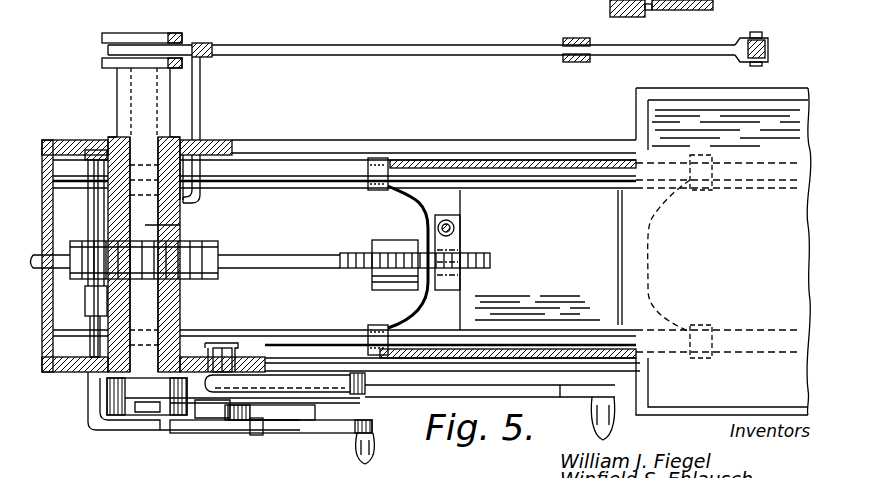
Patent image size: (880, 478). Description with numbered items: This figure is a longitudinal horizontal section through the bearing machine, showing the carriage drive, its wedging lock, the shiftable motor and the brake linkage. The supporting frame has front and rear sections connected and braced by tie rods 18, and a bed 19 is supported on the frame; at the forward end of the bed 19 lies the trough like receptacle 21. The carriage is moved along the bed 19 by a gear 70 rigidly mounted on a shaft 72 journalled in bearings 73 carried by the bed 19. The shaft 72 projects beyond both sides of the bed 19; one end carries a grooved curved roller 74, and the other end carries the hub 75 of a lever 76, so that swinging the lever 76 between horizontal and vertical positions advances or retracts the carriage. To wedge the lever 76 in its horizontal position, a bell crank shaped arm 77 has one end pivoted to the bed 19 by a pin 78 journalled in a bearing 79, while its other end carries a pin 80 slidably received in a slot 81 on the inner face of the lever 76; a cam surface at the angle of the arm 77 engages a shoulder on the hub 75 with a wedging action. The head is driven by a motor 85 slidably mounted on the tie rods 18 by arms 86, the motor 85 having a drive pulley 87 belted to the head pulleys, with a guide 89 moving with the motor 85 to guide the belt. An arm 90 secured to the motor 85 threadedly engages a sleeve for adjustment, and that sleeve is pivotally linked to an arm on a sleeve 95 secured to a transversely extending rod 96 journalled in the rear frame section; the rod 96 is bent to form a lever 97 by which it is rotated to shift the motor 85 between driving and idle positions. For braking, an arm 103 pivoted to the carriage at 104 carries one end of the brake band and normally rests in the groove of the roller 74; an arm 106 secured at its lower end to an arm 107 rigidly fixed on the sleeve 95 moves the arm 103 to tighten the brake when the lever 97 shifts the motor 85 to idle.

The tie rods 18 is at (558, 160).
The bed 19 is at (322, 140).
The trough like receptacle 21 is at (778, 118).
The gear 70 is at (218, 246).
The shaft 72 is at (182, 229).
The bearings 73 is at (183, 212).
The curved roller 74 is at (185, 36).
The hub 75 is at (133, 386).
The lever 76 is at (408, 390).
The bell crank shaped arm 77 is at (300, 378).
The pin 78 is at (235, 346).
The bearing 79 is at (210, 343).
The pin 80 is at (368, 388).
The slot 81 is at (333, 405).
The motor 85 is at (541, 260).
The arms 86 is at (420, 160).
The drive pulley 87 is at (407, 229).
The guide 89 is at (455, 229).
The arm 90 is at (333, 256).
The sleeve 95 is at (88, 297).
The transversely extending rod 96 is at (90, 323).
The lever 97 is at (213, 430).
The arm 103 is at (676, 42).
The pivot 104 is at (576, 38).
The arm 106 is at (216, 58).
The arm 107 is at (203, 122).